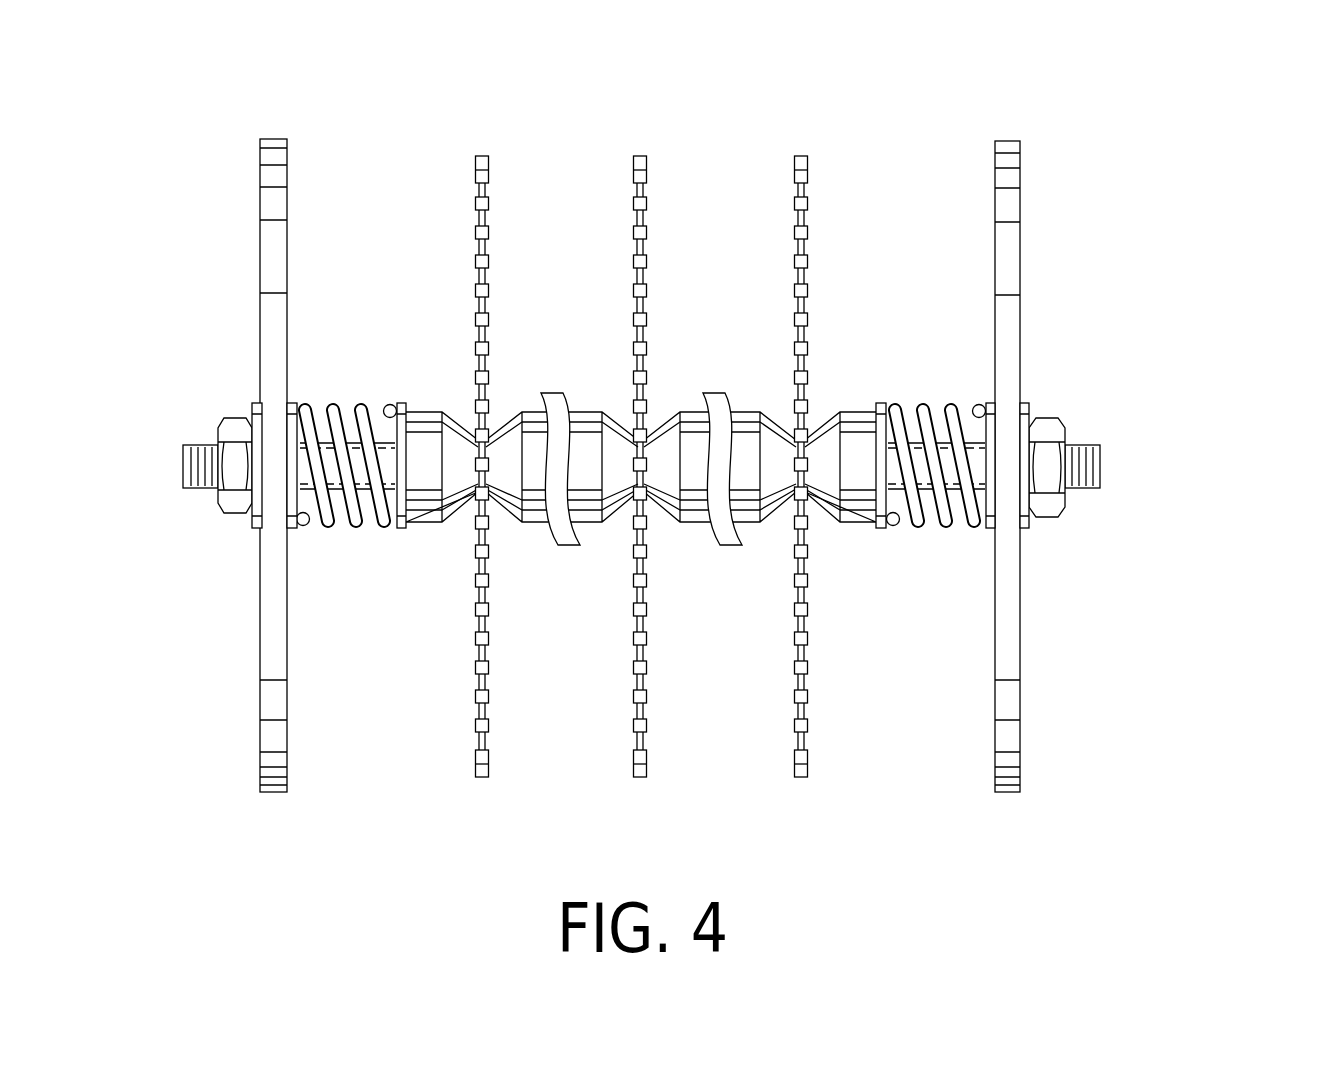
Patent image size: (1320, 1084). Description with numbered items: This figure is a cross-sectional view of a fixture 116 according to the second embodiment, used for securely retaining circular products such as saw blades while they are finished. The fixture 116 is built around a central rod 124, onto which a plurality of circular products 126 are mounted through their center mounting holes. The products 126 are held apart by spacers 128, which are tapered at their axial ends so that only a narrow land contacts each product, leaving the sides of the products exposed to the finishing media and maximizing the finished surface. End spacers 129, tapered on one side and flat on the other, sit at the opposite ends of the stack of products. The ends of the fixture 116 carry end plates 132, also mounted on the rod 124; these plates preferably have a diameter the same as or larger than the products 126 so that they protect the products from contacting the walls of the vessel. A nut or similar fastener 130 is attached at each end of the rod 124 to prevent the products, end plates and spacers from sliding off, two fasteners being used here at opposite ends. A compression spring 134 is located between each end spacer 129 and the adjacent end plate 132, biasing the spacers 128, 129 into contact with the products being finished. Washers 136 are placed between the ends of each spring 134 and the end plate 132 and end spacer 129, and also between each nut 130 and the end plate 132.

The fixture 116 is at (1128, 120).
The central rod 124 is at (1100, 466).
The circular products 126 is at (807, 190).
The spacers 128 is at (590, 410).
The end spacers 129 is at (428, 412).
The nut or fastener 130 is at (222, 515).
The end plates 132 is at (260, 206).
The compression spring 134 is at (335, 527).
The washers 136 is at (400, 402).